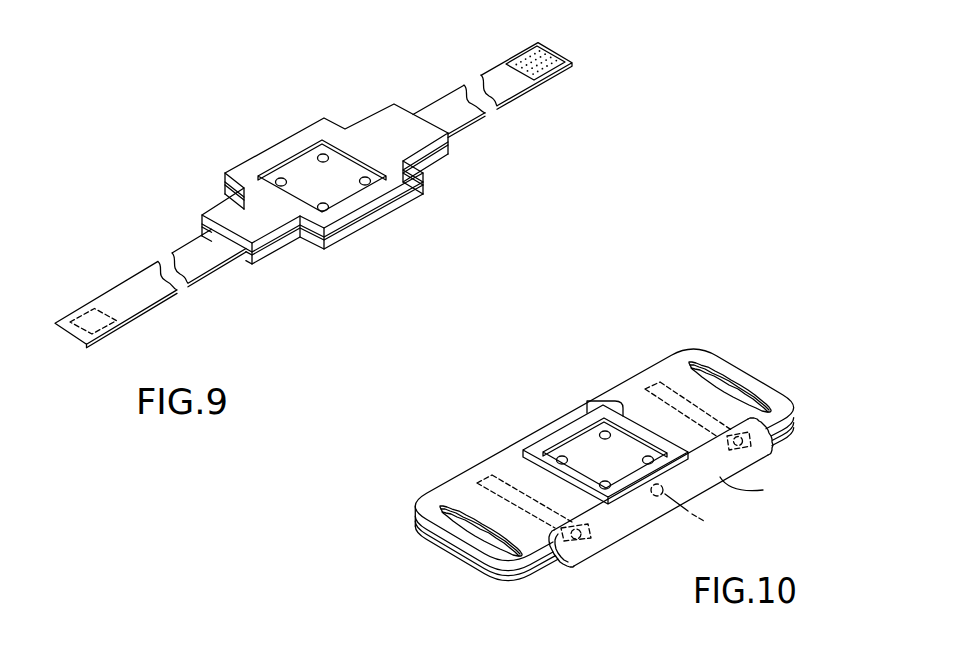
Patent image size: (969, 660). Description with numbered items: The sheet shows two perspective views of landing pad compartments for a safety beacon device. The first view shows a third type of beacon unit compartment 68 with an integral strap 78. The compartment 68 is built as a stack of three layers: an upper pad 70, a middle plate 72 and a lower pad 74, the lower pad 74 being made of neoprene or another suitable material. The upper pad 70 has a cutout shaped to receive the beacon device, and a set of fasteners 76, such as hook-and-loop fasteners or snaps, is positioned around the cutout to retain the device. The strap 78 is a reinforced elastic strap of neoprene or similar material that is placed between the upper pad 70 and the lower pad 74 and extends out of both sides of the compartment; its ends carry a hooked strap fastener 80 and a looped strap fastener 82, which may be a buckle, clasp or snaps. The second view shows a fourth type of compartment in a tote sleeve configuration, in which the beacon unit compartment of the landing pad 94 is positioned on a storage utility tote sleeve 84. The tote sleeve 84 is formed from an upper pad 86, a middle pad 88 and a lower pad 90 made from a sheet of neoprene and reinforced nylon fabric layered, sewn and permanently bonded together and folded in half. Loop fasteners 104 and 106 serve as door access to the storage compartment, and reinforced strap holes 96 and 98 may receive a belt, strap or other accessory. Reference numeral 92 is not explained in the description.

In FIG. 9, the beacon unit compartment 68 is at (230, 133).
In FIG. 9, the upper pad 70 is at (226, 212).
In FIG. 9, the middle plate 72 is at (437, 158).
In FIG. 9, the lower pad 74 is at (384, 219).
In FIG. 9, the fasteners 76 is at (318, 153).
In FIG. 9, the strap 78 is at (458, 118).
In FIG. 9, the hooked strap fastener 80 is at (76, 330).
In FIG. 9, the looped strap fastener 82 is at (549, 53).
In FIG. 10, the tote sleeve 84 is at (496, 383).
In FIG. 10, the upper pad 86 is at (513, 455).
In FIG. 10, the middle pad 88 is at (618, 466).
In FIG. 10, the lower pad 90 is at (542, 580).
In FIG. 10, the raised mount 92 is at (600, 432).
In FIG. 10, the landing pad 94 is at (606, 404).
In FIG. 10, the strap hole 96 is at (475, 540).
In FIG. 10, the strap hole 98 is at (730, 385).
In FIG. 10, the loop fastener 104 is at (486, 477).
In FIG. 10, the loop fastener 106 is at (632, 378).